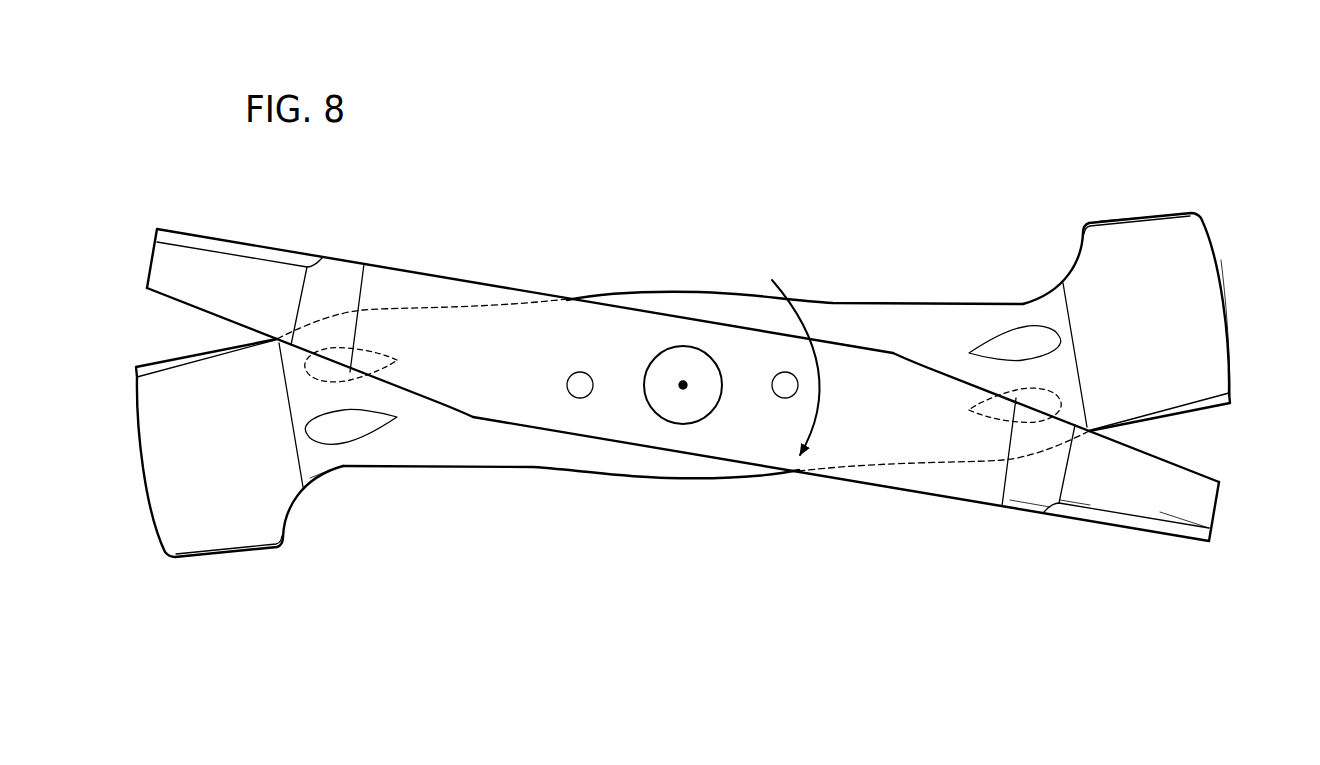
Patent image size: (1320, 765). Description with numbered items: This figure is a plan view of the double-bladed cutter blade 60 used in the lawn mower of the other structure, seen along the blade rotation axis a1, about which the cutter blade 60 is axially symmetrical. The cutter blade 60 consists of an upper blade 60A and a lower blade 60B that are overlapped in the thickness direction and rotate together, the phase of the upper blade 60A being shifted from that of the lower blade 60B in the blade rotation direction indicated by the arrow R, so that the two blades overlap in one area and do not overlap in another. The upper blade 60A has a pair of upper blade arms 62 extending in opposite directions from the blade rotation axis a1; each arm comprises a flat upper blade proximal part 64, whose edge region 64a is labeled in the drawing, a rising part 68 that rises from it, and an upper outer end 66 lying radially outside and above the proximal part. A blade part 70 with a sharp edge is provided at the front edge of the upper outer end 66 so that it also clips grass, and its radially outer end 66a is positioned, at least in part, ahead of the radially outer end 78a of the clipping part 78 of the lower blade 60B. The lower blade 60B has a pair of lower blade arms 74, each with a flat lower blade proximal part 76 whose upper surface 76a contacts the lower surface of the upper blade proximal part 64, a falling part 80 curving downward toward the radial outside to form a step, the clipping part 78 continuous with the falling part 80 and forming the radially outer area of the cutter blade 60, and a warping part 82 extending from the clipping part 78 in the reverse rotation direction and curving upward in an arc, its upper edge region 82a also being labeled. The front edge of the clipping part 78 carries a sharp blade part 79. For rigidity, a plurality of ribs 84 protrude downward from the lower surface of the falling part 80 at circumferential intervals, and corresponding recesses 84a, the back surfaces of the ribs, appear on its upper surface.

The cutter blade 60 is at (722, 140).
The upper blade 60A is at (597, 443).
The lower blade 60B is at (742, 291).
The upper blade arms 62 is at (388, 266).
The upper blade proximal part 64 is at (918, 477).
The base portion edge 64a is at (943, 390).
The upper outer end 66 is at (1090, 492).
The radially outer end of the upper outer end 66a is at (1195, 505).
The rising part 68 is at (1032, 495).
The blade part 70 is at (188, 242).
The lower blade arms 74 is at (388, 471).
The lower blade proximal part 76 is at (458, 422).
The upper surface of the lower blade proximal part 76a is at (846, 325).
The clipping part 78 is at (207, 417).
The radially outer end of the clipping part 78a is at (1203, 323).
The blade part 79 is at (162, 368).
The falling part 80 is at (325, 457).
The warping part 82 is at (195, 523).
The top edge end 82a is at (1173, 212).
The ribs 84 is at (1053, 397).
The recesses 84a is at (1023, 398).
The blade rotation axis a1 is at (683, 392).
The arrow indicating blade rotation direction R is at (803, 367).